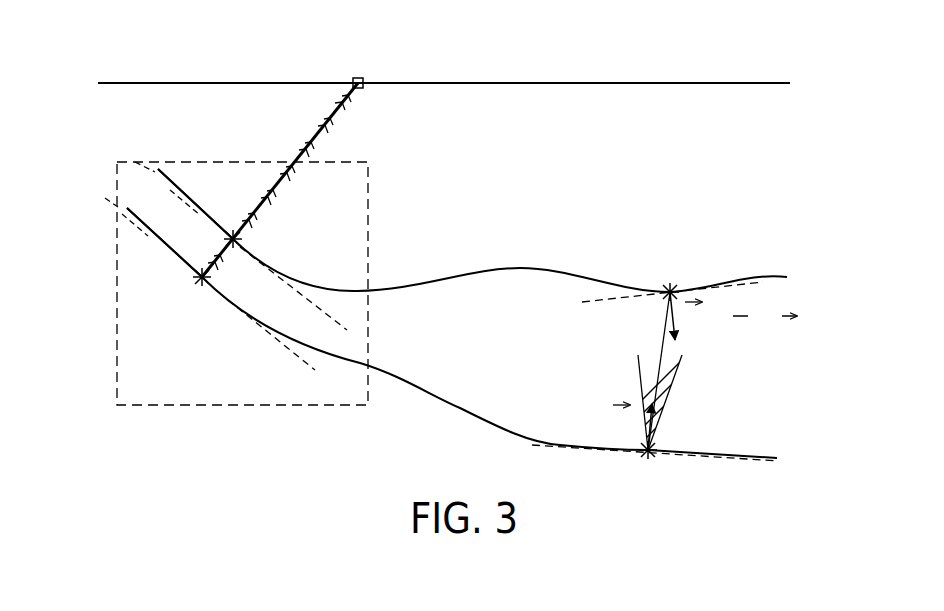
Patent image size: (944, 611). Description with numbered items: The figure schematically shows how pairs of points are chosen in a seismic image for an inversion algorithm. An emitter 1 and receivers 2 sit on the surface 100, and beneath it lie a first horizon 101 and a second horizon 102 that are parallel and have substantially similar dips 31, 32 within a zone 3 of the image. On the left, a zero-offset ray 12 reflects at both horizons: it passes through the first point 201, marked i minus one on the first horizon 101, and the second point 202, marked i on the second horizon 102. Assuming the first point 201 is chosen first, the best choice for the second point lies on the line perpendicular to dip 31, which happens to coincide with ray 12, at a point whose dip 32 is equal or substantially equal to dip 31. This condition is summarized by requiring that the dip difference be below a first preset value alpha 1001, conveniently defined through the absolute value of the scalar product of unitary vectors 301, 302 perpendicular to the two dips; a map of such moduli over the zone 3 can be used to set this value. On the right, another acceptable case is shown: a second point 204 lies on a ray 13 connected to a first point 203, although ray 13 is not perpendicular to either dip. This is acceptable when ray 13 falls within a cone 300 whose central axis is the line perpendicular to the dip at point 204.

The emitter 1 is at (385, 50).
The receivers 2 is at (362, 79).
The zone 3 is at (172, 408).
The zero-offset ray 12 is at (327, 115).
The ray 13 is at (662, 345).
The dip 31 is at (160, 185).
The dip 32 is at (150, 234).
The surface 100 is at (740, 82).
The first horizon 101 is at (740, 272).
The second horizon 102 is at (740, 452).
The first point 201 is at (238, 239).
The second point 202 is at (200, 282).
The first point 203 is at (669, 290).
The second point 204 is at (648, 455).
The cone 300 is at (640, 385).
The unitary vector 301 is at (745, 345).
The unitary vector 302 is at (778, 345).
The first preset value alpha 1001 is at (845, 320).